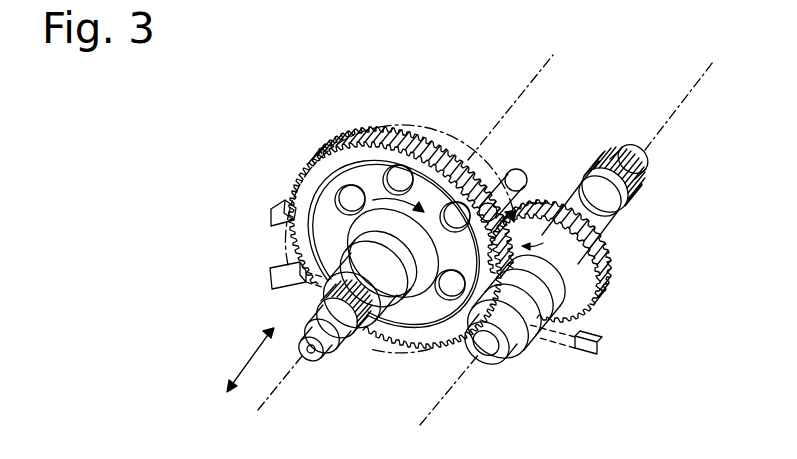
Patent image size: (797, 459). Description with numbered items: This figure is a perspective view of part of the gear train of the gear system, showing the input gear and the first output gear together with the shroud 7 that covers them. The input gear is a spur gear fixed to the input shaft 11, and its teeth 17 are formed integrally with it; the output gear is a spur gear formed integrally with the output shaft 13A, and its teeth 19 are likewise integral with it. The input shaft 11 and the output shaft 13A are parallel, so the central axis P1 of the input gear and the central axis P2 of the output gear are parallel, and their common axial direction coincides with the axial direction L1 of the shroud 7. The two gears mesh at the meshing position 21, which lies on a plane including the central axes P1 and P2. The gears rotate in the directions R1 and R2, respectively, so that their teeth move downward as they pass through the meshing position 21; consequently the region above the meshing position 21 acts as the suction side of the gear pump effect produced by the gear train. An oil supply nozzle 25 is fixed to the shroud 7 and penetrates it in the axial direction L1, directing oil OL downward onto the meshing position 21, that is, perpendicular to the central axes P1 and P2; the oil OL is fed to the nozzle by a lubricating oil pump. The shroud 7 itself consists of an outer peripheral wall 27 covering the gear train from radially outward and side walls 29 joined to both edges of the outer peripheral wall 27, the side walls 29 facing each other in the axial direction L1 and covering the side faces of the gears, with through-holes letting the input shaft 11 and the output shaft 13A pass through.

The shroud 7 is at (395, 120).
The input shaft 11 is at (597, 195).
The output shaft 13A is at (384, 290).
The teeth 17 is at (612, 238).
The teeth 19 is at (393, 126).
The meshing position 21 is at (485, 345).
The oil supply nozzle 25 is at (500, 192).
The outer peripheral wall 27 is at (325, 148).
The side walls 29 is at (318, 146).
The axial direction L1 is at (247, 361).
The central axis P1 is at (688, 92).
The central axis P2 is at (560, 56).
The oil OL is at (527, 203).
The rotation direction R1 is at (549, 204).
The rotation direction R2 is at (429, 216).